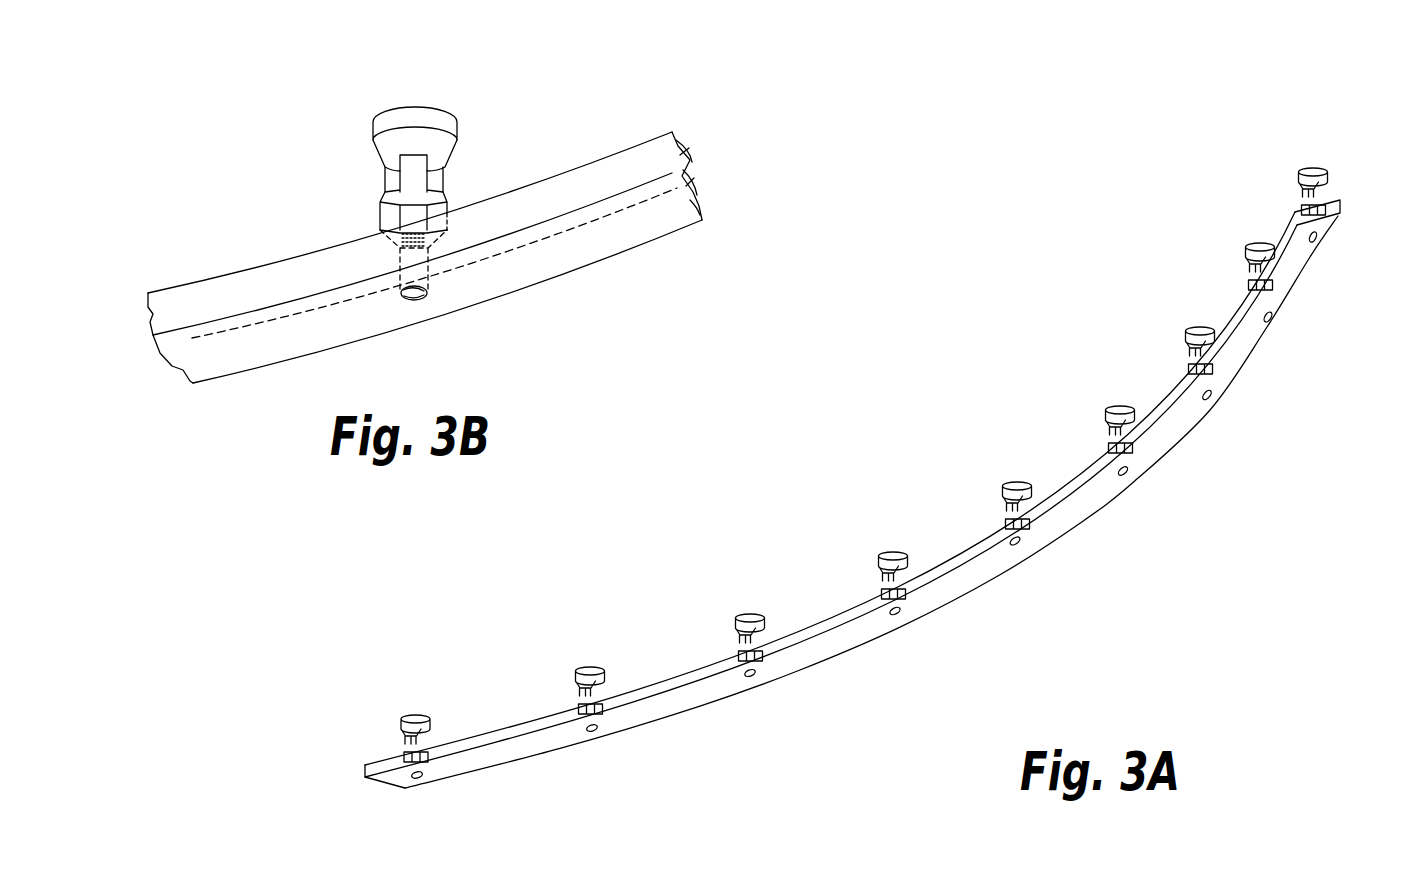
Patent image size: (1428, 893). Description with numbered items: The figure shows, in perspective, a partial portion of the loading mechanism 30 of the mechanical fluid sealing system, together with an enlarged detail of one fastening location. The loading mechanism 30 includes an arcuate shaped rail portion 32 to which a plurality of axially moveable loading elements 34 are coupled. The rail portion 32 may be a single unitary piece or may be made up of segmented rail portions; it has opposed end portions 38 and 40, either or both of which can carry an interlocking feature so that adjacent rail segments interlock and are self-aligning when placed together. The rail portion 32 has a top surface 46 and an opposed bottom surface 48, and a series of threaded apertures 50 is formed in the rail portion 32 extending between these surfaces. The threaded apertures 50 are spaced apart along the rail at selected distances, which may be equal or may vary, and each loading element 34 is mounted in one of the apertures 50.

In FIG. 3B, the loading mechanism 30 is at (455, 209).
In FIG. 3A, the loading mechanism 30 is at (872, 497).
In FIG. 3B, the rail portion 32 is at (502, 283).
In FIG. 3A, the rail portion 32 is at (872, 515).
In FIG. 3B, the loading element 34 is at (438, 120).
In FIG. 3A, the loading element 34 is at (1006, 485).
In FIG. 3A, the end portion 38 is at (1341, 192).
In FIG. 3A, the end portion 40 is at (387, 785).
In FIG. 3A, the top surface 46 is at (692, 665).
In FIG. 3A, the bottom surface 48 is at (845, 632).
In FIG. 3A, the threaded aperture 50 is at (753, 678).